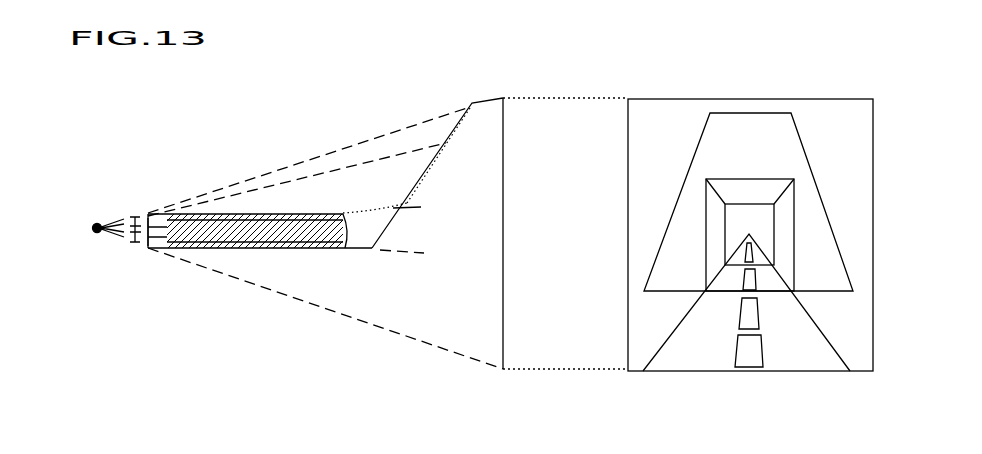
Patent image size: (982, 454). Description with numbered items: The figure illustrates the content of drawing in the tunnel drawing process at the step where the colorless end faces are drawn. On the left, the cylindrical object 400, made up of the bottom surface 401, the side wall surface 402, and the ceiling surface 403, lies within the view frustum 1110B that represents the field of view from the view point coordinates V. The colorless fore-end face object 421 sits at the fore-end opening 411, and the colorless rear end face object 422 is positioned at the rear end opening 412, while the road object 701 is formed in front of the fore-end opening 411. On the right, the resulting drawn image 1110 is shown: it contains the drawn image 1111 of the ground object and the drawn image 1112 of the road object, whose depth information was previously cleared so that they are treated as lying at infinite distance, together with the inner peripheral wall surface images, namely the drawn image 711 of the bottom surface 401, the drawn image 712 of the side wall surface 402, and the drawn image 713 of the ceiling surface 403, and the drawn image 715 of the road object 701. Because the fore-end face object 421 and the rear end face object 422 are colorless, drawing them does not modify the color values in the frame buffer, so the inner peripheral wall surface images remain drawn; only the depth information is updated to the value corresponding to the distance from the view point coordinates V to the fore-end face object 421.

The view point coordinates V is at (95, 231).
The road object 701 is at (153, 238).
The cylindrical object 400 is at (328, 198).
The bottom surface 401 is at (237, 243).
The side wall surface 402 is at (211, 232).
The ceiling surface 403 is at (314, 213).
The fore-end opening 411 is at (158, 227).
The rear end opening 412 is at (356, 230).
The fore-end face object 421 is at (155, 213).
The rear end face object 422 is at (407, 203).
The view frustum 1110B is at (455, 107).
The drawn image 1110 is at (697, 99).
The drawn image of ground object 1111 is at (766, 113).
The drawn image of ceiling surface 713 is at (753, 192).
The drawn image of road object 1112 is at (760, 247).
The drawn image of side wall surface 712 is at (715, 234).
The drawn image of bottom surface 711 is at (773, 282).
The drawn image of road object 715 is at (800, 362).